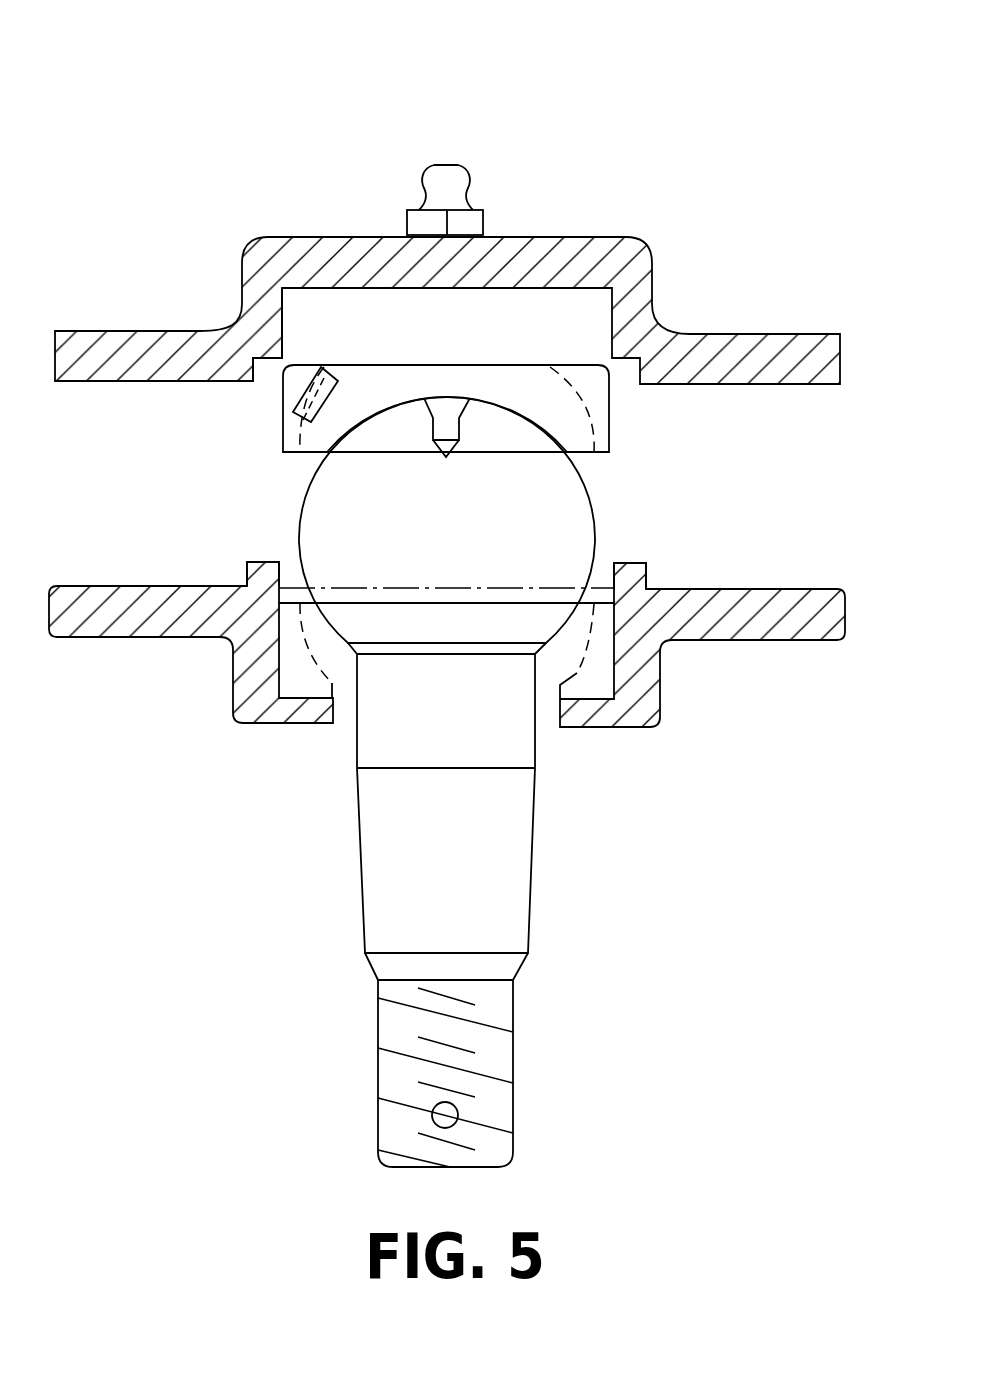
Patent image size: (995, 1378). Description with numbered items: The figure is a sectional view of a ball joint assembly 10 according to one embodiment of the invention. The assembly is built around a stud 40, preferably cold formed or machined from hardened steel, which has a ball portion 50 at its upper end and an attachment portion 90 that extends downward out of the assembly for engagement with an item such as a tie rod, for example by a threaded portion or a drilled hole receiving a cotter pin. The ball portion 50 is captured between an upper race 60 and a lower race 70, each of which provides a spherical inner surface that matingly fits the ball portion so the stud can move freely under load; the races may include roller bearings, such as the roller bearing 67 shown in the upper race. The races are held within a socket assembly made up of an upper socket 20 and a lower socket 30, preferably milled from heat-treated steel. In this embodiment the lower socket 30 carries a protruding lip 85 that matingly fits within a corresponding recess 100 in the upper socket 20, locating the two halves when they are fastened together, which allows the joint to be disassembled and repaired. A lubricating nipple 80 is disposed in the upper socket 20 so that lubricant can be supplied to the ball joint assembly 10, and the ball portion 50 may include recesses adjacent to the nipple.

The ball joint assembly 10 is at (500, 118).
The upper socket 20 is at (723, 347).
The lower socket 30 is at (773, 605).
The stud 40 is at (378, 857).
The ball portion 50 is at (562, 512).
The upper race 60 is at (598, 412).
The roller bearing 67 is at (318, 380).
The lower race 70 is at (592, 677).
The lubricating nipple 80 is at (446, 180).
The protruding lip 85 is at (268, 560).
The attachment portion 90 is at (495, 1057).
The recess 100 is at (270, 373).